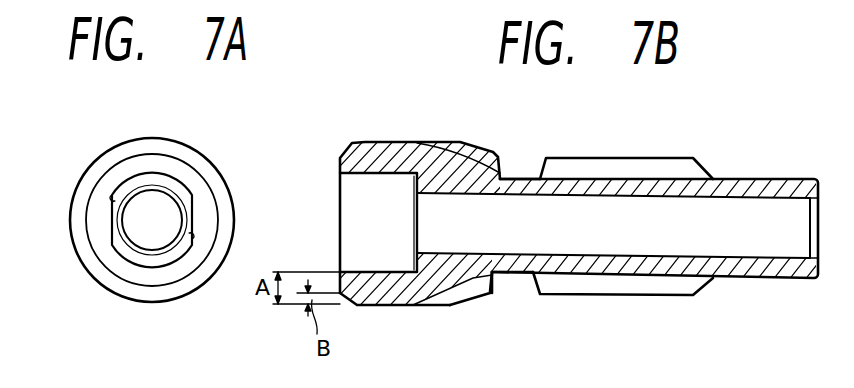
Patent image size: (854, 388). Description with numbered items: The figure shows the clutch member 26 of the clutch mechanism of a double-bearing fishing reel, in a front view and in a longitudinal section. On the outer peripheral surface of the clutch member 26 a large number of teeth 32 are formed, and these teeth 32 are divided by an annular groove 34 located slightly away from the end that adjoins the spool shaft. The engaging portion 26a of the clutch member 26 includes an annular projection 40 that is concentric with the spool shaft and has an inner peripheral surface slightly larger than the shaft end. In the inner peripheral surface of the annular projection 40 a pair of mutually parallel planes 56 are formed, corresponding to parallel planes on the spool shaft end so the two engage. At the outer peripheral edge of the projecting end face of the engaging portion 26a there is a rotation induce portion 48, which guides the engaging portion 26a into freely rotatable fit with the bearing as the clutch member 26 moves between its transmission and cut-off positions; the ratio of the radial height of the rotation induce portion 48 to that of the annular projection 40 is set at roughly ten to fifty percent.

In FIG. 7A, the clutch member 26 is at (97, 158).
In FIG. 7B, the clutch member 26 is at (750, 178).
In FIG. 7B, the engaging portion 26a is at (473, 283).
In FIG. 7B, the teeth 32 is at (598, 161).
In FIG. 7B, the annular groove 34 is at (513, 178).
In FIG. 7B, the annular projection 40 is at (387, 290).
In FIG. 7A, the rotation induce portion 48 is at (198, 161).
In FIG. 7B, the rotation induce portion 48 is at (342, 149).
In FIG. 7A, the parallel planes 56 is at (113, 203).
In FIG. 7B, the parallel planes 56 is at (347, 203).